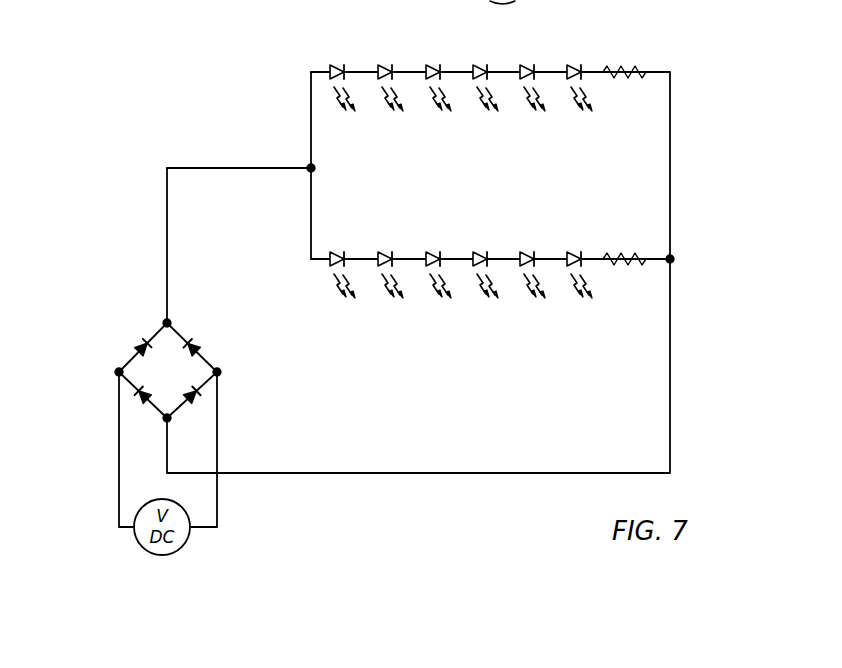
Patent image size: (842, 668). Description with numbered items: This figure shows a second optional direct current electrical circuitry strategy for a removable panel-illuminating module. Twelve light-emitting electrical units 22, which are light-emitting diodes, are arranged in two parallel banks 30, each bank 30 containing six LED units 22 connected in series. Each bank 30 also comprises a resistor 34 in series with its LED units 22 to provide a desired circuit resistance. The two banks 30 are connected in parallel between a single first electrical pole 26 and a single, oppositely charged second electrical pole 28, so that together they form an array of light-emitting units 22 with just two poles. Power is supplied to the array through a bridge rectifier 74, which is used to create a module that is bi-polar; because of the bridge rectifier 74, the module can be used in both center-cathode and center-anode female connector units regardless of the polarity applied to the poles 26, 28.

The light-emitting electrical unit 22 is at (333, 71).
The first electrical pole 26 is at (310, 166).
The second electrical pole 28 is at (675, 262).
The parallel bank 30 is at (456, 161).
The resistor 34 is at (624, 191).
The bridge rectifier 74 is at (120, 351).